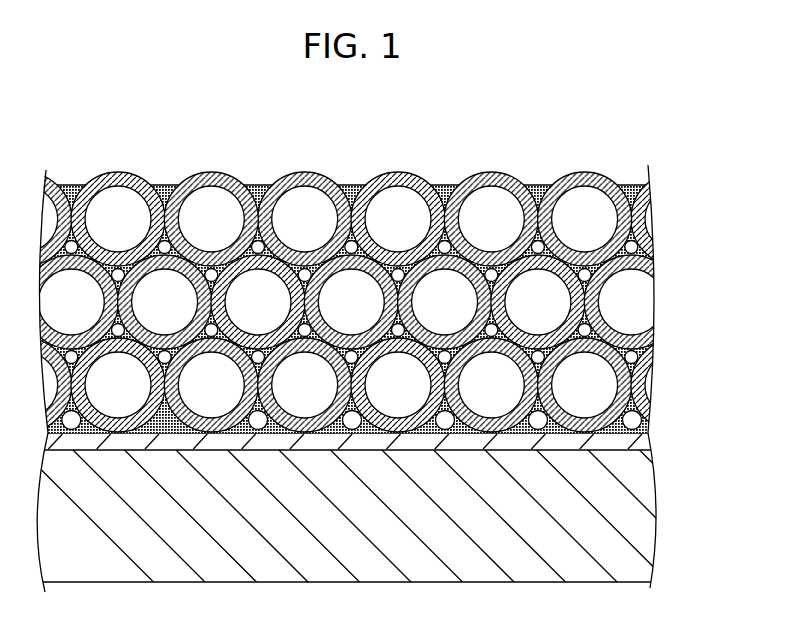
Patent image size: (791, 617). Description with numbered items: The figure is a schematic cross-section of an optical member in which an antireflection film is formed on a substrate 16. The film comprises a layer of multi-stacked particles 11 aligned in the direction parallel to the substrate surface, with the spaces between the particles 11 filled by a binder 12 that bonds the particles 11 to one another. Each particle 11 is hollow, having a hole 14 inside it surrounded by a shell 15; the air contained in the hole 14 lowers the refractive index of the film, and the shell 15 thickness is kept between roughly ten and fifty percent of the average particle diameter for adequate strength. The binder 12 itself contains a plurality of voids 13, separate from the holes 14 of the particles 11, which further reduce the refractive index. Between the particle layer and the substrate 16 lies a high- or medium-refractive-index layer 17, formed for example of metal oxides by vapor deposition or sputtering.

The particle 11 is at (403, 176).
The binder 12 is at (614, 244).
The void 13 is at (206, 212).
The hole 14 is at (121, 198).
The shell 15 is at (88, 183).
The substrate 16 is at (625, 498).
The medium-refractive-index layer 17 is at (625, 441).